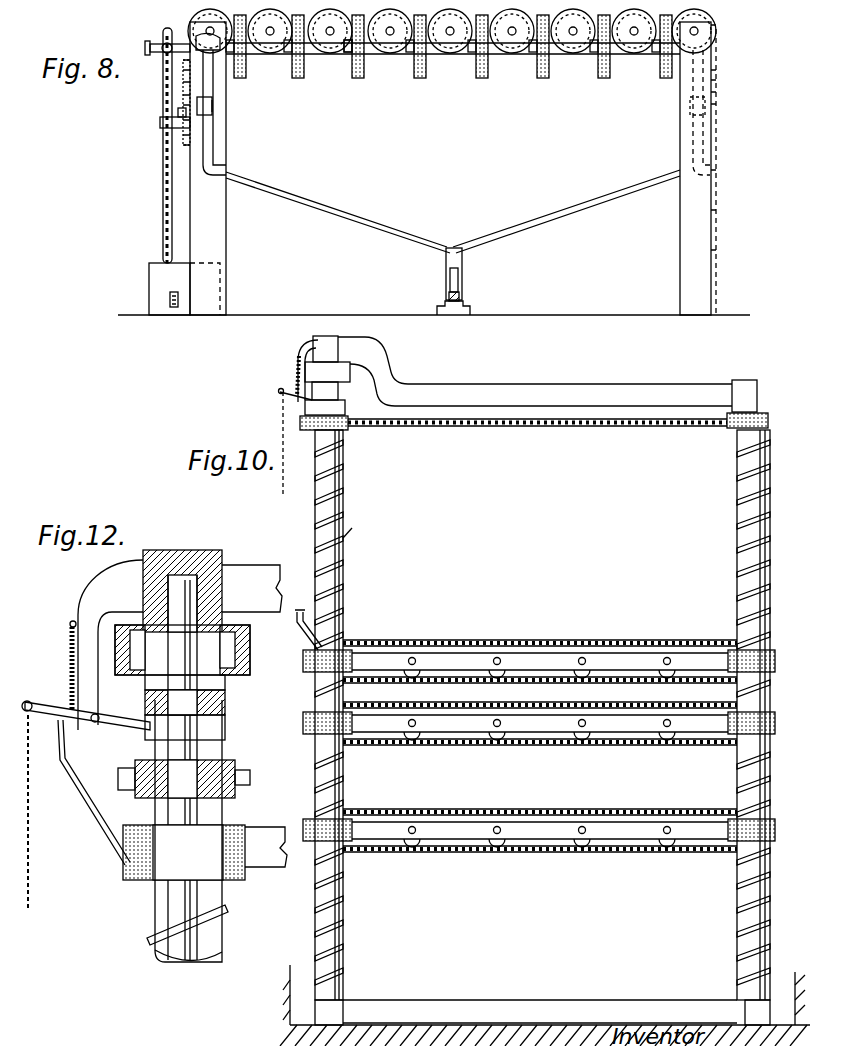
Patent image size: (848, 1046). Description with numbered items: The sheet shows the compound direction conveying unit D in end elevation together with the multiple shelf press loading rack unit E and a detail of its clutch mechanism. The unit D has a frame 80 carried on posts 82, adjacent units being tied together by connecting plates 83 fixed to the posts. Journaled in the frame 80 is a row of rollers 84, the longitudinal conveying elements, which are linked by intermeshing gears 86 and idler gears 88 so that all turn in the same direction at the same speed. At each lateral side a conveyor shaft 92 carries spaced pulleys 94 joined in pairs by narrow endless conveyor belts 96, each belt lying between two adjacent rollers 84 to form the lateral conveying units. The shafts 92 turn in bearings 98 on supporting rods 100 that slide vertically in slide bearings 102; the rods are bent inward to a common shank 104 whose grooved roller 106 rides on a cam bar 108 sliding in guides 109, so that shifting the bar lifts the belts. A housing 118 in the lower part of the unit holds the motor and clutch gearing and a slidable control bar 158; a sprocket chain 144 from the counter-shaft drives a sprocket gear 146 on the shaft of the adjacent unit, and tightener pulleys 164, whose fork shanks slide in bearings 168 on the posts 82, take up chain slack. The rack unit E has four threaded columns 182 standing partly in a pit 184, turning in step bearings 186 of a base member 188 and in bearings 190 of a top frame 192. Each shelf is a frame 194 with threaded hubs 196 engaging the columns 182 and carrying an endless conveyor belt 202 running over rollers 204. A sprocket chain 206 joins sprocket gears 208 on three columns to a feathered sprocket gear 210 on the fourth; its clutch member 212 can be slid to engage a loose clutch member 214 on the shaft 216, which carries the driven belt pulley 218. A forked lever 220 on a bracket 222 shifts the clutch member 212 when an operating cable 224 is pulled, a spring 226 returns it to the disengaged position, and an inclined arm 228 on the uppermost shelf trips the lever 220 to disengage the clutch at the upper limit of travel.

In FIG. 8, the frame 80 is at (450, 57).
In FIG. 8, the posts 82 is at (453, 168).
In FIG. 8, the connecting plates 83 is at (735, 88).
In FIG. 8, the rollers 84 is at (222, 16).
In FIG. 8, the intermeshing gears 86 is at (586, 15).
In FIG. 8, the idler gears 88 is at (352, 60).
In FIG. 8, the conveyor shafts 92 is at (149, 57).
In FIG. 8, the pulleys 94 is at (365, 66).
In FIG. 8, the conveyor belts 96 is at (600, 79).
In FIG. 8, the bearings 98 is at (655, 95).
In FIG. 8, the supporting rods 100 is at (692, 122).
In FIG. 8, the slide bearings 102 is at (690, 110).
In FIG. 8, the common shank 104 is at (463, 262).
In FIG. 8, the grooved roller 106 is at (459, 279).
In FIG. 8, the cam bar 108 is at (460, 297).
In FIG. 8, the guides 109 is at (452, 316).
In FIG. 8, the housing 118 is at (149, 285).
In FIG. 8, the sprocket chain 144 is at (163, 172).
In FIG. 8, the sprocket gear 146 is at (162, 33).
In FIG. 8, the control bar 158 is at (173, 308).
In FIG. 8, the tightener pulleys 164 is at (178, 112).
In FIG. 8, the bearings 168 is at (160, 125).
In FIG. 8, the compound direction unit D is at (489, 70).
In FIG. 10, the threaded columns 182 is at (343, 604).
In FIG. 12, the threaded columns 182 is at (222, 950).
In FIG. 10, the pit 184 is at (288, 990).
In FIG. 10, the step bearings 186 is at (735, 1014).
In FIG. 10, the base member 188 is at (540, 1008).
In FIG. 10, the bearings 190 is at (772, 387).
In FIG. 12, the bearings 190 is at (190, 552).
In FIG. 10, the top frame 192 is at (580, 391).
In FIG. 12, the top frame 192 is at (260, 567).
In FIG. 10, the frame 194 is at (462, 812).
In FIG. 12, the frame 194 is at (265, 835).
In FIG. 10, the threaded hubs 196 is at (366, 810).
In FIG. 12, the threaded hubs 196 is at (184, 852).
In FIG. 10, the endless conveyor belt 202 is at (640, 746).
In FIG. 10, the rollers 204 is at (500, 746).
In FIG. 10, the sprocket chain 206 is at (562, 428).
In FIG. 12, the sprocket chain 206 is at (118, 777).
In FIG. 10, the sprocket gears 208 is at (769, 418).
In FIG. 10, the sprocket gear 210 is at (344, 410).
In FIG. 12, the sprocket gear 210 is at (235, 768).
In FIG. 10, the clutch member 212 is at (339, 393).
In FIG. 12, the clutch member 212 is at (225, 706).
In FIG. 12, the clutch member 214 is at (225, 683).
In FIG. 12, the shaft 216 is at (197, 592).
In FIG. 10, the belt pulley 218 is at (350, 372).
In FIG. 12, the belt pulley 218 is at (250, 652).
In FIG. 10, the forked lever 220 is at (296, 395).
In FIG. 12, the forked lever 220 is at (112, 727).
In FIG. 10, the bracket 222 is at (298, 352).
In FIG. 12, the bracket 222 is at (110, 645).
In FIG. 10, the operating cable 224 is at (282, 418).
In FIG. 12, the operating cable 224 is at (30, 876).
In FIG. 10, the spring 226 is at (296, 382).
In FIG. 12, the spring 226 is at (69, 672).
In FIG. 10, the inclined arm 228 is at (302, 623).
In FIG. 12, the inclined arm 228 is at (80, 820).
In FIG. 10, the multiple shelf press loading rack unit E is at (354, 523).
In FIG. 12, the multiple shelf press loading rack unit E is at (222, 928).